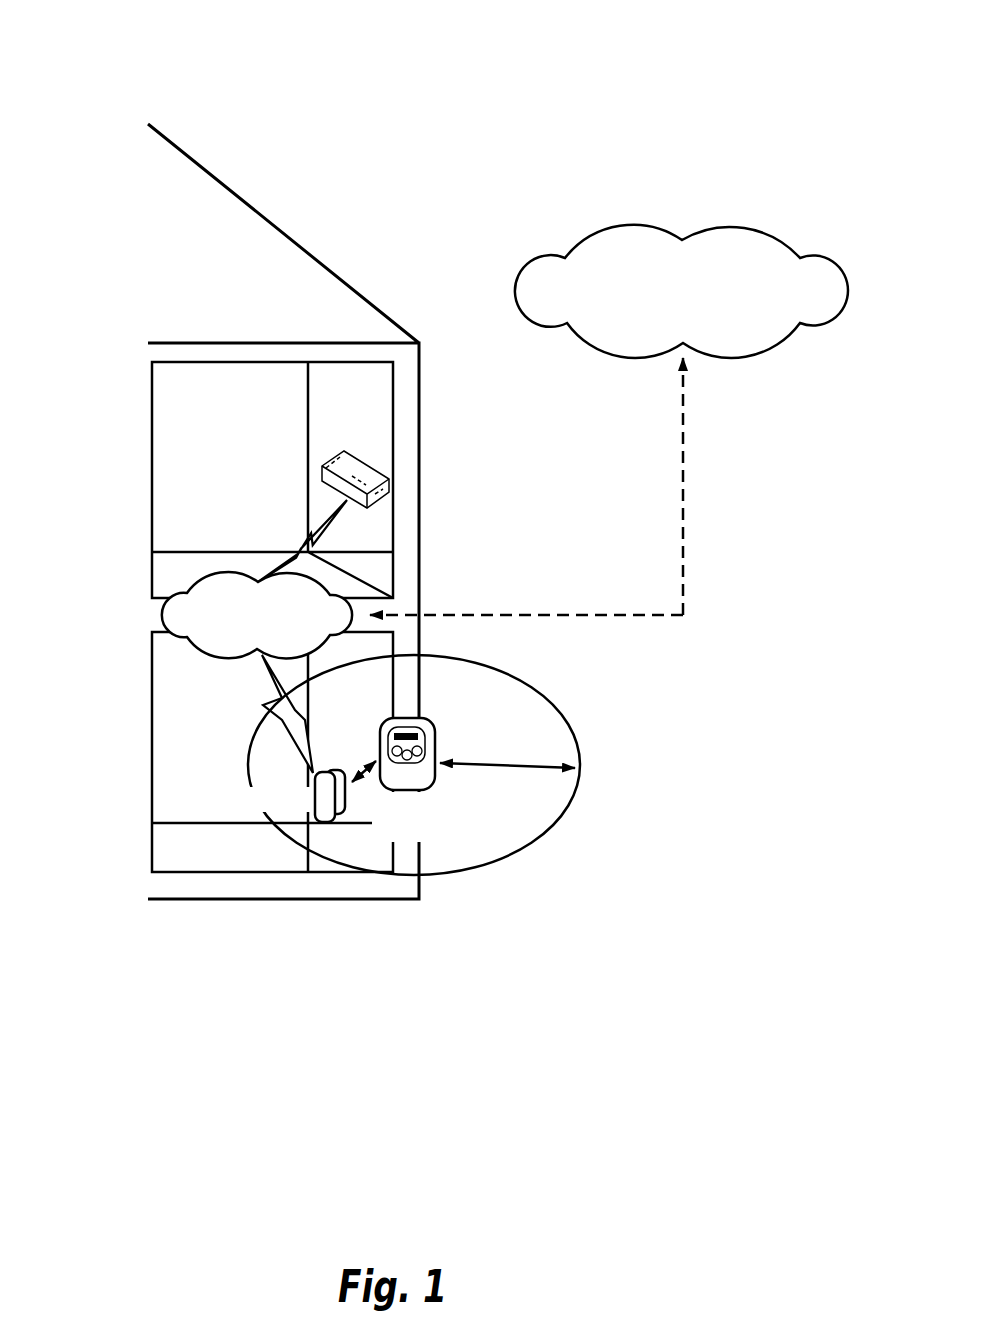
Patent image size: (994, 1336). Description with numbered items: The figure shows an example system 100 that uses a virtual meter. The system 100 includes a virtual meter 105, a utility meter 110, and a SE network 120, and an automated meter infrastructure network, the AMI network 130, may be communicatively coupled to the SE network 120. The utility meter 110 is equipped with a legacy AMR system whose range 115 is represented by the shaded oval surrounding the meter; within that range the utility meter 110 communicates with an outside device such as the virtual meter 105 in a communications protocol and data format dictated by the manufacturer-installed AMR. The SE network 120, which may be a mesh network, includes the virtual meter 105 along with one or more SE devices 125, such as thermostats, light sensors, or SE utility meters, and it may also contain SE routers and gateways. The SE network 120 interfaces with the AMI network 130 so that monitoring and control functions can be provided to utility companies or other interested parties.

The system 100 is at (592, 27).
The virtual meter 105 is at (312, 822).
The utility meter 110 is at (432, 722).
The range 115 is at (503, 768).
The SE network 120 is at (162, 615).
The SE device 125 is at (327, 462).
The AMI network 130 is at (603, 228).